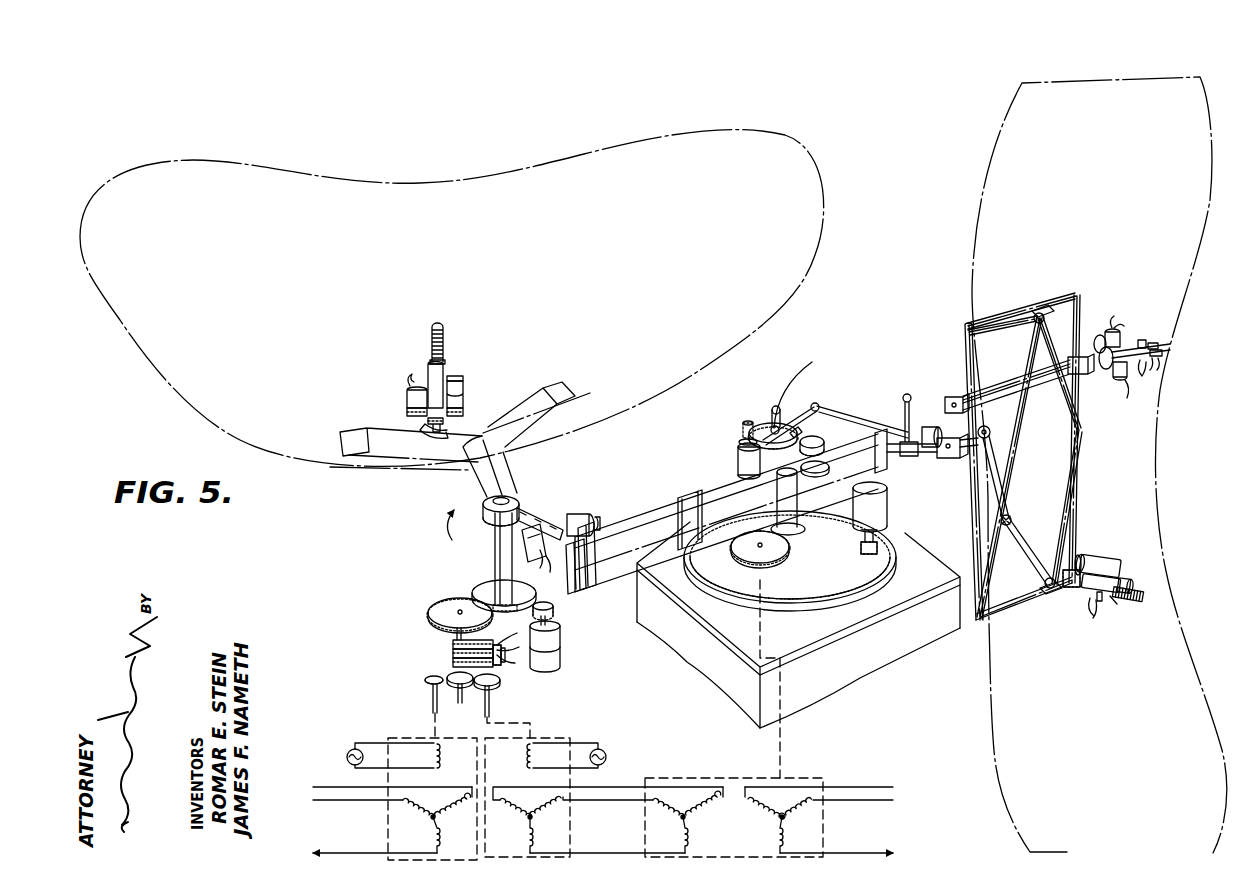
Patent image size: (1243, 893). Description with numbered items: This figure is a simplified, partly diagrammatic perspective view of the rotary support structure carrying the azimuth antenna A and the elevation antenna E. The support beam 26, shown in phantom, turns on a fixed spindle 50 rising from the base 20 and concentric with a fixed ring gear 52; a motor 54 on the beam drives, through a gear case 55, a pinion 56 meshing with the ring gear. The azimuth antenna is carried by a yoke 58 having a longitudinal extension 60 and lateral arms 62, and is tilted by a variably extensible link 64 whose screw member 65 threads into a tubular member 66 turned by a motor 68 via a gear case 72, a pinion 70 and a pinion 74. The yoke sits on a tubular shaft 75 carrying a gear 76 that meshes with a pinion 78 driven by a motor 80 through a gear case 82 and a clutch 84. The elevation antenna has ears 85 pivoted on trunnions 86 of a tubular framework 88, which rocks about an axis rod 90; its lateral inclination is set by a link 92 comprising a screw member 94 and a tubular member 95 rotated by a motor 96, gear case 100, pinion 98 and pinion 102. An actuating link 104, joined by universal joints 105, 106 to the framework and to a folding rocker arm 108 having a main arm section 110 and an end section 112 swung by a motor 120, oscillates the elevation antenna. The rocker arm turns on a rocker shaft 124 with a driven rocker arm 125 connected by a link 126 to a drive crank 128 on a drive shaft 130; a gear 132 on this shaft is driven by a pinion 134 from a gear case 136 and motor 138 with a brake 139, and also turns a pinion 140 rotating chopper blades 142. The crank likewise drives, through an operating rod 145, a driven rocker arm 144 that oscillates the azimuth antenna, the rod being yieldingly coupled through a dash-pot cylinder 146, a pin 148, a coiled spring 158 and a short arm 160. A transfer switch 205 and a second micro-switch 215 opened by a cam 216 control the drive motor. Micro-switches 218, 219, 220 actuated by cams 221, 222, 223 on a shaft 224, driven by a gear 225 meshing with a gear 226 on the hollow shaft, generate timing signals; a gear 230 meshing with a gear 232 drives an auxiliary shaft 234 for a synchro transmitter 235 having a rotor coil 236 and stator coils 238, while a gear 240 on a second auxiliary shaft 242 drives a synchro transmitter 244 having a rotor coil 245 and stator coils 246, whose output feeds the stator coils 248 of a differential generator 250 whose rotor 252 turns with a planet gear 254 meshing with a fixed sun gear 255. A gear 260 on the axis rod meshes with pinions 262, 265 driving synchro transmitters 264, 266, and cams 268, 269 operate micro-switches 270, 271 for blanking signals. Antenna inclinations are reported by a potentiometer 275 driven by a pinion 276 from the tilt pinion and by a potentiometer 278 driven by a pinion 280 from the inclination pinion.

The aircraft outline A is at (829, 208).
The elevation antenna E is at (976, 213).
The base 20 is at (712, 681).
The support beam 26 is at (665, 510).
The fixed spindle 50 is at (790, 511).
The fixed ring gear 52 is at (830, 593).
The motor 54 is at (880, 500).
The gear case 55 is at (865, 537).
The pinion 56 is at (862, 551).
The yoke 58 is at (476, 492).
The longitudinal extension 60 is at (440, 438).
The lateral arms 62 is at (575, 394).
The variably extensible link 64 is at (448, 360).
The screw member 65 is at (445, 330).
The tubular member 66 is at (444, 373).
The reversible motor 68 is at (463, 381).
The pinion 70 is at (464, 411).
The gear case 72 is at (464, 396).
The second pinion 74 is at (444, 421).
The tubular shaft 75 is at (500, 571).
The gear 76 is at (480, 590).
The pinion 78 is at (554, 609).
The motor 80 is at (560, 660).
The gear case 82 is at (560, 645).
The clutch 84 is at (559, 629).
The ears 85 is at (1040, 307).
The trunnions 86 is at (1045, 320).
The framework 88 is at (1084, 479).
The transverse axis rod 90 is at (1043, 380).
The variably extensible link 92 is at (1122, 606).
The screw member 94 is at (1138, 601).
The tubular member 95 is at (1100, 602).
The reversible motor 96 is at (1126, 578).
The pinion 98 is at (1096, 560).
The gear case 100 is at (1105, 576).
The second pinion 102 is at (1082, 556).
The actuating link 104 is at (1001, 470).
The universal joint 105 is at (1011, 519).
The universal joint 106 is at (991, 434).
The actuating rocker arm 108 is at (953, 458).
The main arm section 110 is at (926, 456).
The end section 112 is at (985, 402).
The reversible motor 120 is at (934, 426).
The vertical rocker shaft 124 is at (912, 425).
The driven rocker arm 125 is at (908, 394).
The link 126 is at (840, 418).
The drive crank 128 is at (798, 418).
The vertical drive shaft 130 is at (775, 406).
The gear 132 is at (755, 428).
The pinion 134 is at (746, 424).
The gear case 136 is at (738, 452).
The motor 138 is at (740, 472).
The automatic brake 139 is at (740, 441).
The second pinion 140 is at (826, 440).
The chopper blades 142 is at (830, 466).
The driven rocker arm 144 is at (522, 512).
The operating rod 145 is at (676, 522).
The dash-pot cylinder 146 is at (566, 522).
The pin 148 is at (578, 590).
The coiled spring 158 is at (597, 548).
The short arm 160 is at (596, 518).
The transfer switch 205 is at (522, 548).
The second micro-switch 215 is at (802, 432).
The cam 216 is at (800, 386).
The micro-switch 218 is at (500, 645).
The micro-switch 219 is at (502, 662).
The micro-switch 220 is at (505, 668).
The cam 221 is at (453, 645).
The cam 222 is at (453, 655).
The cam 223 is at (453, 665).
The shaft 224 is at (456, 638).
The gear 225 is at (440, 614).
The gear 226 is at (452, 604).
The gear 230 is at (460, 700).
The gear 232 is at (430, 682).
The auxiliary shaft 234 is at (432, 712).
The synchro transmitter 235 is at (388, 738).
The rotor coil 236 is at (409, 755).
The stator coils 238 is at (392, 820).
The gear 240 is at (494, 686).
The second auxiliary shaft 242 is at (492, 710).
The second synchro transmitter 244 is at (570, 738).
The rotor coil 245 is at (548, 755).
The stator coils 246 is at (607, 820).
The stator coils 248 is at (700, 826).
The differential generator 250 is at (800, 778).
The three coil rotor 252 is at (806, 815).
The planet gear 254 is at (748, 566).
The fixed sun gear 255 is at (780, 556).
The gear 260 is at (1106, 370).
The pinion 262 is at (1099, 335).
The synchro transmitter 264 is at (1120, 330).
The second pinion 265 is at (1126, 386).
The second synchro transmitter 266 is at (1150, 372).
The cam 268 is at (1146, 342).
The cam 269 is at (1158, 348).
The micro-switch 270 is at (1160, 362).
The micro-switch 271 is at (1162, 355).
The potentiometer 275 is at (407, 399).
The pinion 276 is at (407, 413).
The potentiometer 278 is at (1090, 614).
The pinion 280 is at (1072, 590).